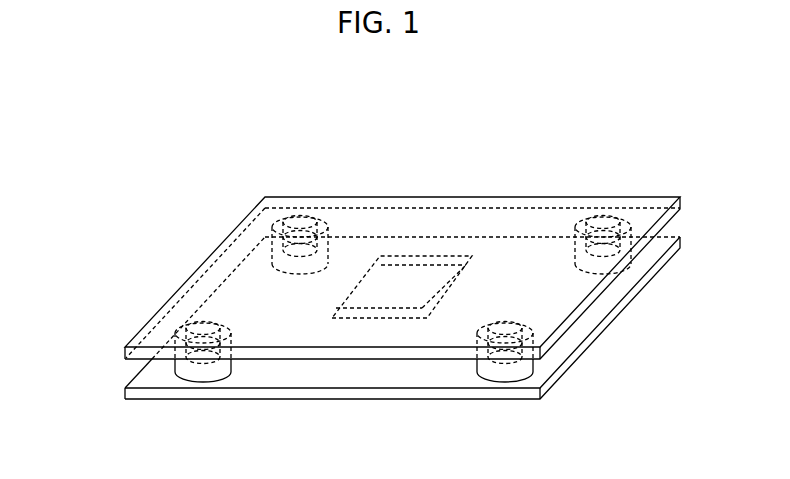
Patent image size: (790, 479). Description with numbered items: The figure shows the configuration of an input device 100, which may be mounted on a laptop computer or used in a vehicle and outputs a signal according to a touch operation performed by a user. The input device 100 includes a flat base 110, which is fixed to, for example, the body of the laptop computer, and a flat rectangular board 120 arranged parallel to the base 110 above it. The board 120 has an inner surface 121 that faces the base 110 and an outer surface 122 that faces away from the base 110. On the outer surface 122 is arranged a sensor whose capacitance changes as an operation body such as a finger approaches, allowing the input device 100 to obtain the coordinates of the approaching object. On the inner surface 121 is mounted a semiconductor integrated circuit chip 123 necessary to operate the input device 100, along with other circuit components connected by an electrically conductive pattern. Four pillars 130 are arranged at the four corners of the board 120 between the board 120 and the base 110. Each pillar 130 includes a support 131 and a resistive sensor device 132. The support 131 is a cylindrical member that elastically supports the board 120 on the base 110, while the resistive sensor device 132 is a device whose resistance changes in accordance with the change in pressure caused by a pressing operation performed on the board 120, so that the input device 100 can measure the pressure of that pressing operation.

The input device 100 is at (284, 103).
The base 110 is at (124, 389).
The board 120 is at (124, 352).
The inner surface 121 is at (455, 219).
The outer surface 122 is at (388, 220).
The semiconductor integrated circuit chip 123 is at (473, 258).
The pillar 130 is at (358, 260).
The support 131 is at (220, 345).
The resistive sensor device 132 is at (200, 333).